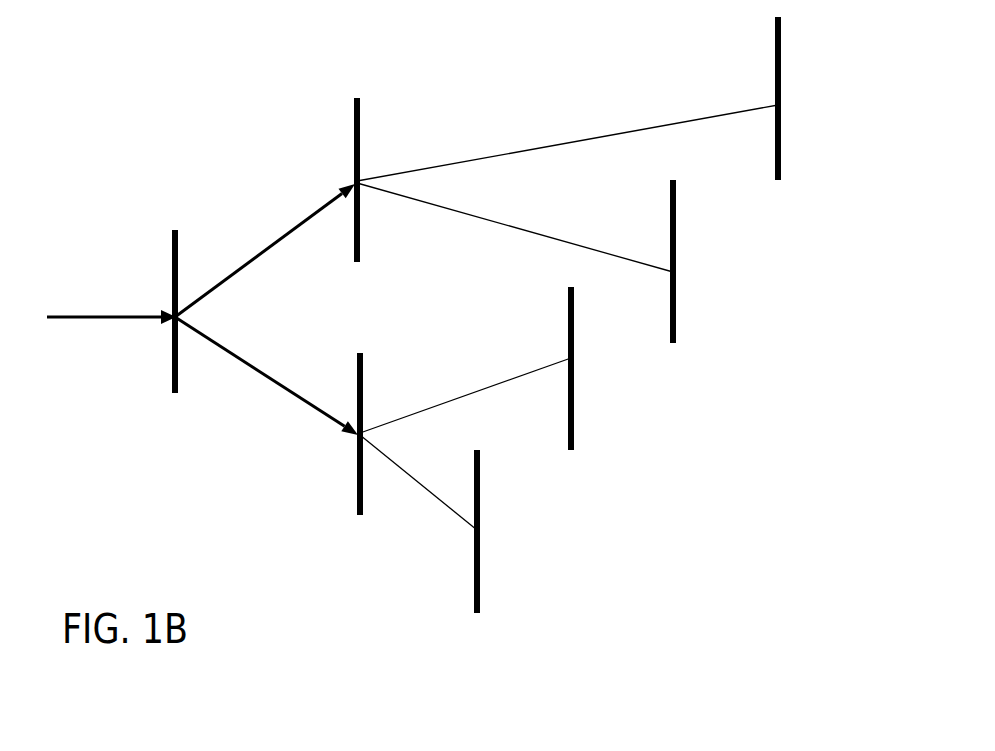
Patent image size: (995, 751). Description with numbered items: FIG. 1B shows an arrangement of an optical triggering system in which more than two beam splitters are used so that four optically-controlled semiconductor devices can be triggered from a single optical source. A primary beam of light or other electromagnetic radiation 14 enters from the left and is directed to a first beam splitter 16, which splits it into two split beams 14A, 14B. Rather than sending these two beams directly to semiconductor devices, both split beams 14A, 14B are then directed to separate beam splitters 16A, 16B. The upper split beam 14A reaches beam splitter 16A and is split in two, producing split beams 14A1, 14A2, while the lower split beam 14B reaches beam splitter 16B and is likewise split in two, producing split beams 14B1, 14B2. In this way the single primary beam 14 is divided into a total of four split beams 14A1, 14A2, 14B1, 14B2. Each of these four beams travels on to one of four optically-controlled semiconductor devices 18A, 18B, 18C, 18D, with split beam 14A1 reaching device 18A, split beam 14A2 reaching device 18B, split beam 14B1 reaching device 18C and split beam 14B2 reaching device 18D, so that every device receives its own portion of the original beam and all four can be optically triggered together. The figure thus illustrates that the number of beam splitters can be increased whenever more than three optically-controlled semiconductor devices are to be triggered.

The beam of light 14 is at (102, 318).
The beam splitter 16 is at (173, 273).
The split beam 14A is at (278, 237).
The split beam 14B is at (270, 383).
The beam splitter 16A is at (355, 140).
The beam splitter 16B is at (357, 472).
The split beam 14A1 is at (568, 147).
The split beam 14A2 is at (513, 227).
The split beam 14B1 is at (463, 398).
The split beam 14B2 is at (420, 490).
The optically-controlled semiconductor device 18A is at (773, 147).
The optically-controlled semiconductor device 18B is at (670, 328).
The optically-controlled semiconductor device 18C is at (568, 440).
The optically-controlled semiconductor device 18D is at (475, 587).